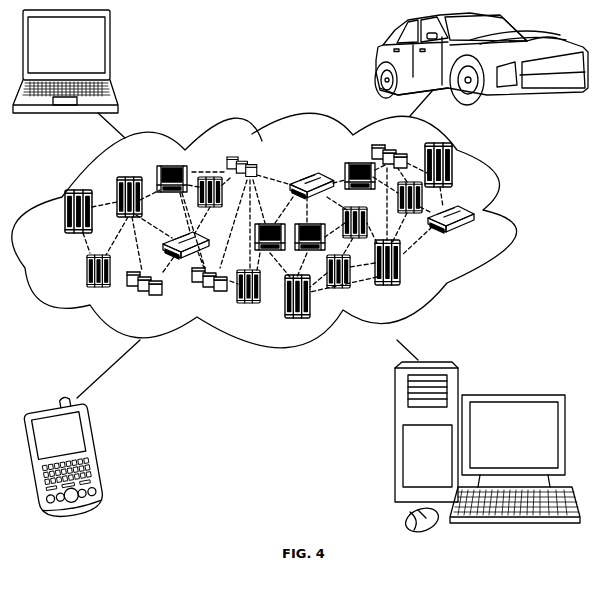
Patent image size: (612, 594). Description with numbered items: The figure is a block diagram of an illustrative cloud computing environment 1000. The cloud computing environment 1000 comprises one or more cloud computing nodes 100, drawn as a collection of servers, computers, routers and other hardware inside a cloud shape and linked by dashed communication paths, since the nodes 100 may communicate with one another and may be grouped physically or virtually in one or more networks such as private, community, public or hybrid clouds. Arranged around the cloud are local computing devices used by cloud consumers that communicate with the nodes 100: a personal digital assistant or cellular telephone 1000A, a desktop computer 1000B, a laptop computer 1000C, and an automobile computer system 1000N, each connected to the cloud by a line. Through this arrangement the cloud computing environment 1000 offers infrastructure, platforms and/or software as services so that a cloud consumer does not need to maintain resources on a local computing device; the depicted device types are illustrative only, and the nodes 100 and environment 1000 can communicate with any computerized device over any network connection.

The cloud computing nodes 100 is at (484, 241).
The cloud computing environment 1000 is at (512, 218).
The personal digital assistant (PDA) or cellular telephone 1000A is at (106, 456).
The desktop computer 1000B is at (512, 393).
The laptop computer 1000C is at (110, 50).
The automobile computer system 1000N is at (378, 58).